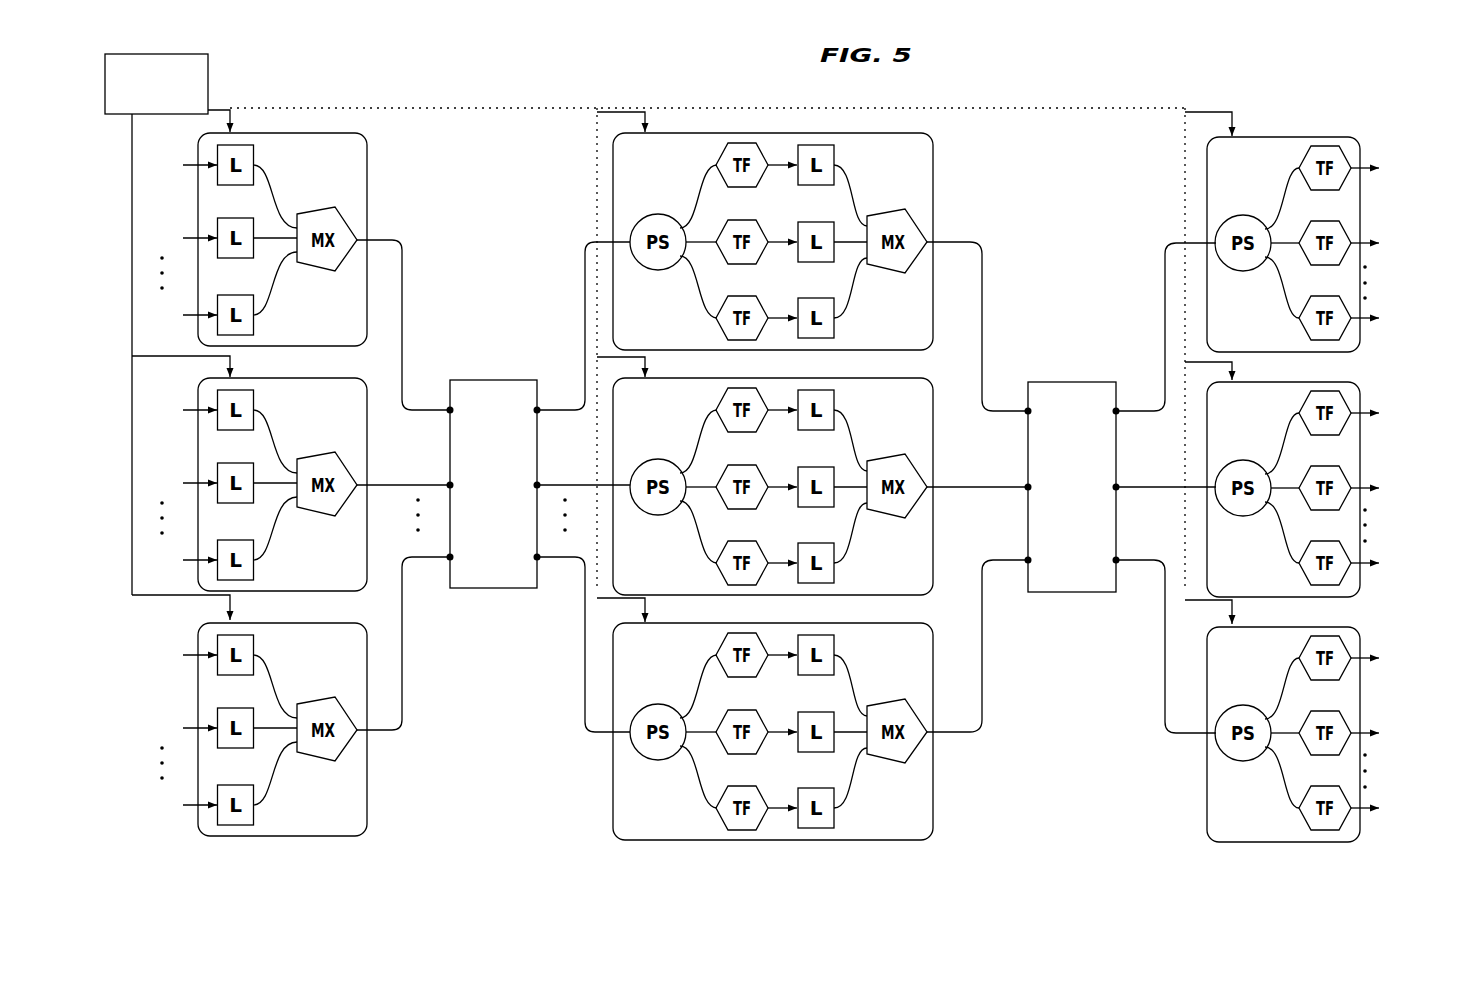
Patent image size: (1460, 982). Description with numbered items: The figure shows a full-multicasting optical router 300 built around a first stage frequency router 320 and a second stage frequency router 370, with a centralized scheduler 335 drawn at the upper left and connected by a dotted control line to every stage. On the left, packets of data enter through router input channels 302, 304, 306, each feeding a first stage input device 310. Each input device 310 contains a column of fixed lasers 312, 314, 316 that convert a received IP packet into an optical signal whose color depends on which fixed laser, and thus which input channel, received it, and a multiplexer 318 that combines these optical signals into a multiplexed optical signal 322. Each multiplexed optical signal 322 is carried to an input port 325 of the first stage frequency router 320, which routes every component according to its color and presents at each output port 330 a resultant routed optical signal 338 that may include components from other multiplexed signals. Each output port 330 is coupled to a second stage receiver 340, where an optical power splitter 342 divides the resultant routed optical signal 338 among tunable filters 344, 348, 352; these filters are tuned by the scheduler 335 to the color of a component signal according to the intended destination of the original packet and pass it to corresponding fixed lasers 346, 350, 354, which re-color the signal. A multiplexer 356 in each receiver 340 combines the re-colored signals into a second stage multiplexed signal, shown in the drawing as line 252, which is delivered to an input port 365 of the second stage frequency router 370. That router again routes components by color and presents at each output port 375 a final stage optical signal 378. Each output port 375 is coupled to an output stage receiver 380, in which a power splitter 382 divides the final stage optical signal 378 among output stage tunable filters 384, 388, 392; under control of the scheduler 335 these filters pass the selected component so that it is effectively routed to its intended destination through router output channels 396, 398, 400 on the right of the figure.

The optical router 300 is at (1181, 90).
The centralized scheduler 335 is at (668, 339).
The router input channels 302 is at (177, 242).
The router input channels 304 is at (177, 487).
The router input channels 306 is at (177, 732).
The first stage input devices 310 is at (367, 193).
The fixed lasers 312 is at (243, 216).
The fixed lasers 314 is at (243, 461).
The fixed lasers 316 is at (243, 706).
The multiplexer 318 is at (335, 272).
The first stage frequency router 320 is at (480, 588).
The multiplexed optical signal 322 is at (404, 292).
The input ports 325 is at (447, 407).
The output ports 330 is at (538, 407).
The resultant routed optical signal 338 is at (585, 282).
The second stage receiver 340 is at (933, 190).
The optical power splitter 342 is at (651, 268).
The tunable filters 344 is at (717, 160).
The fixed lasers 346 is at (836, 157).
The tunable filters 348 is at (717, 405).
The fixed lasers 350 is at (836, 402).
The tunable filters 352 is at (717, 650).
The fixed lasers 354 is at (836, 647).
The multiplexer 356 is at (905, 274).
The multiplexed output line to second AWG 252 is at (984, 293).
The input ports 365 is at (1024, 408).
The second stage frequency router 370 is at (1048, 592).
The output ports 375 is at (1119, 408).
The final stage optical signal 378 is at (1165, 280).
The output stage receiver 380 is at (1363, 142).
The power splitter 382 is at (1235, 270).
The output stage tunable filters 384 is at (1300, 162).
The output stage tunable filters 388 is at (1300, 407).
The output stage tunable filters 392 is at (1300, 652).
The router output channels 396 is at (1394, 245).
The router output channels 398 is at (1394, 490).
The router output channels 400 is at (1394, 735).